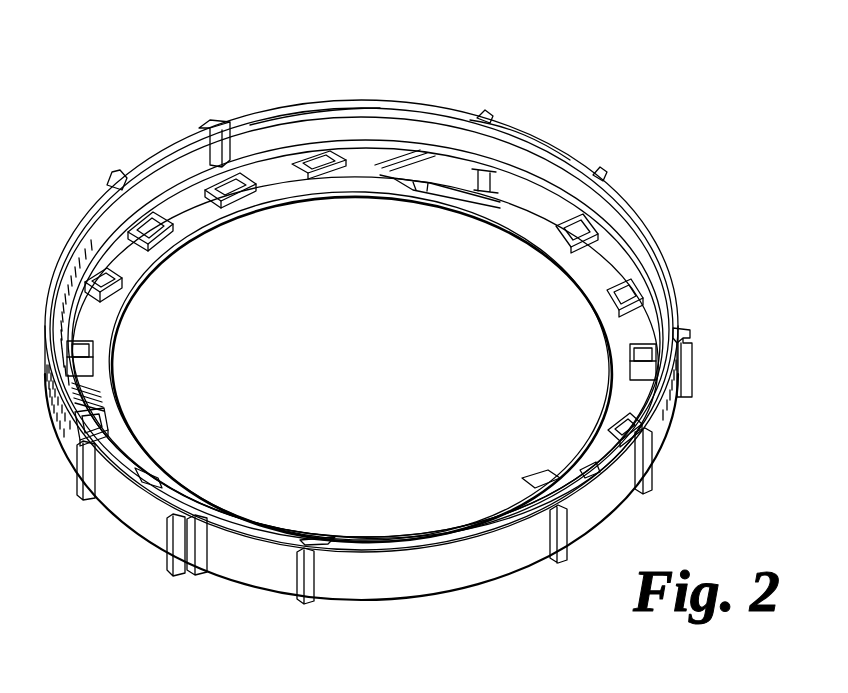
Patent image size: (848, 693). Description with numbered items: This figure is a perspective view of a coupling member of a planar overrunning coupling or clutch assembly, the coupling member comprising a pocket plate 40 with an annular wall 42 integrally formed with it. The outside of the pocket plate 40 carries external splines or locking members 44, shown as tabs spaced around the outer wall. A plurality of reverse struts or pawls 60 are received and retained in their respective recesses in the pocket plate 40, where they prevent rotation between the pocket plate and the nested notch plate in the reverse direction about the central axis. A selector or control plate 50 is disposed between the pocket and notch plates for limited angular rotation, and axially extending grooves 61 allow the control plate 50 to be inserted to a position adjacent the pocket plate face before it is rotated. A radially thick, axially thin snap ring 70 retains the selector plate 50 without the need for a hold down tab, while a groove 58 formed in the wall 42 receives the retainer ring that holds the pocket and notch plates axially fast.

The pocket plate 40 is at (127, 322).
The annular wall 42 is at (560, 152).
The external splines 44 is at (112, 178).
The control plate 50 is at (430, 194).
The groove 58 is at (172, 168).
The reverse struts 60 is at (231, 192).
The axially extending grooves 61 is at (260, 118).
The snap ring 70 is at (515, 170).